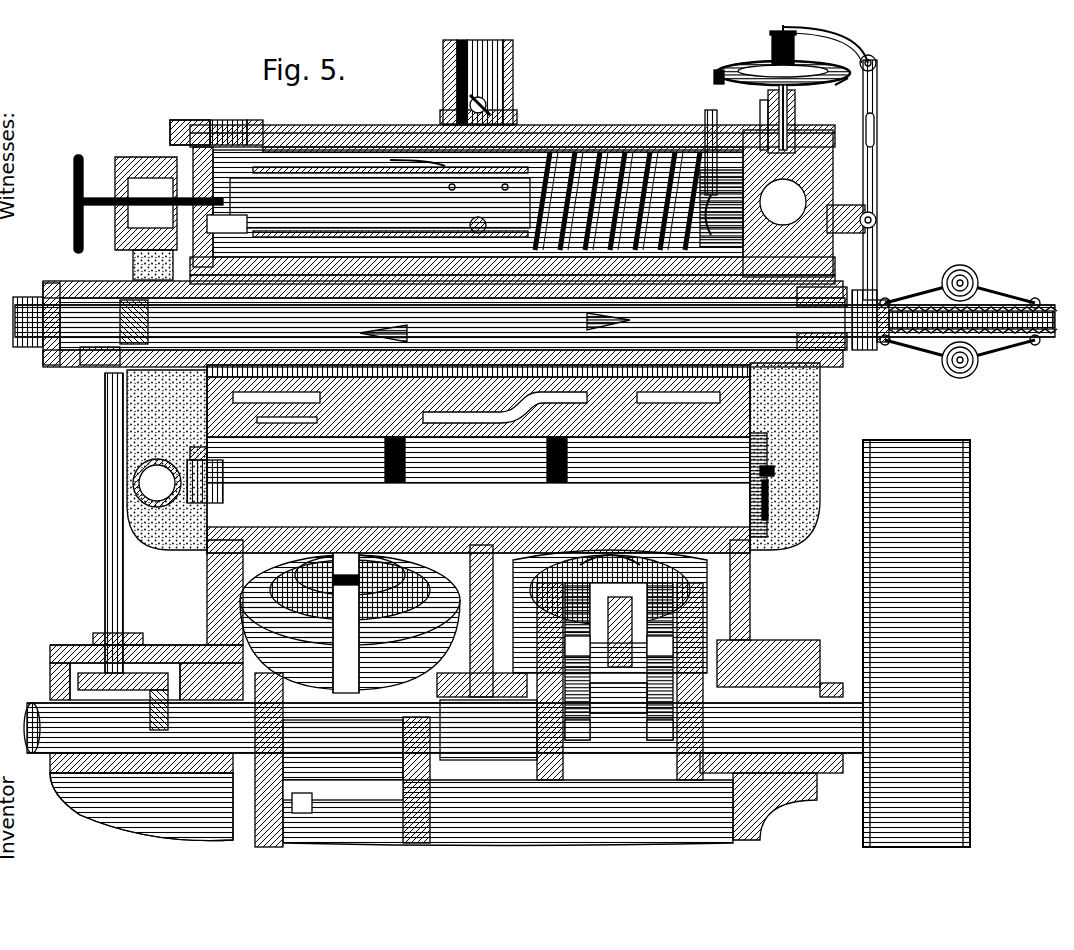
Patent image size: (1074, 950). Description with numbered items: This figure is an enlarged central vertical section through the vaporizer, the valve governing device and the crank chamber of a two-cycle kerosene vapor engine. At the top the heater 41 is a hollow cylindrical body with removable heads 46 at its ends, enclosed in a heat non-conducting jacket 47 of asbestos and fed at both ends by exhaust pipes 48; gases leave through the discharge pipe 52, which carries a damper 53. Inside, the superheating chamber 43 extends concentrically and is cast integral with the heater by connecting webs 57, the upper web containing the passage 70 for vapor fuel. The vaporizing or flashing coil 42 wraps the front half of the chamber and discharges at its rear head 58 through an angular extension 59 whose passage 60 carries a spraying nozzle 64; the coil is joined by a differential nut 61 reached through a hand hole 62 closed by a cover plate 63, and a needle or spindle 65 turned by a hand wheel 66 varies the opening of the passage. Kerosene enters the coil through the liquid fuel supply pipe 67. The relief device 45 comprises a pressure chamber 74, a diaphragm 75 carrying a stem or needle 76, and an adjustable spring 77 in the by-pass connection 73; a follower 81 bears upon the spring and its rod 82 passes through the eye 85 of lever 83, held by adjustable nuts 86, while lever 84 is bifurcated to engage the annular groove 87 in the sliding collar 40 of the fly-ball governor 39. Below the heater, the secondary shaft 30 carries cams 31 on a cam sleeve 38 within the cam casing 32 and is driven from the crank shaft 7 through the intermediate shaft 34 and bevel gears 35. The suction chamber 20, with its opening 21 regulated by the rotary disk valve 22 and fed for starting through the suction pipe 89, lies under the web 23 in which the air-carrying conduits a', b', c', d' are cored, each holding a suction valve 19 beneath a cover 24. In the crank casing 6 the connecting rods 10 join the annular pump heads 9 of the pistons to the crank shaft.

The crank casing 6 is at (479, 715).
The crank shaft 7 is at (848, 700).
The annular pump head 9 is at (228, 595).
The connecting rod 10 is at (527, 645).
The suction valve 19 is at (393, 472).
The suction chamber 20 is at (470, 459).
The opening 21 is at (752, 498).
The rotary disk valve 22 is at (765, 510).
The web 23 is at (607, 432).
The cover 24 is at (330, 440).
The secondary shaft 30 is at (534, 322).
The cam 31 is at (405, 330).
The cam casing 32 is at (92, 282).
The intermediate shaft 34 is at (108, 422).
The bevel gears 35 is at (90, 362).
The cam sleeve 38 is at (818, 352).
The fly-ball governor 39 is at (965, 375).
The sliding collar 40 is at (866, 352).
The heater 41 is at (640, 140).
The vaporizing or flashing coil 42 is at (540, 140).
The superheating chamber 43 is at (330, 160).
The relief device 45 is at (796, 100).
The removable head 46 is at (145, 165).
The heat non-conducting jacket 47 is at (340, 167).
The exhaust pipe 48 is at (812, 430).
The outlet or discharge pipe 52 is at (505, 58).
The damper 53 is at (485, 100).
The connecting web 57 is at (470, 223).
The head 58 is at (270, 214).
The angular extension 59 is at (135, 262).
The passage 60 is at (180, 143).
The differential nut 61 is at (228, 118).
The hand hole 62 is at (200, 125).
The cover plate 63 is at (253, 122).
The spraying nozzle 64 is at (272, 150).
The needle or spindle 65 is at (100, 198).
The hand wheel 66 is at (73, 205).
The liquid fuel supply pipe 67 is at (708, 118).
The passage 70 is at (445, 160).
The by-pass connection or pipe 73 is at (768, 108).
The pressure chamber 74 is at (748, 80).
The diaphragm 75 is at (835, 80).
The stem or needle 76 is at (788, 120).
The adjustable spring 77 is at (871, 58).
The follower 81 is at (720, 70).
The rod 82 is at (794, 50).
The lever 83 is at (878, 90).
The lever 84 is at (878, 187).
The eye 85 is at (772, 44).
The adjustable nuts 86 is at (770, 34).
The annular groove 87 is at (880, 298).
The suction pipe 89 is at (157, 490).
The air-carrying conduit a' is at (308, 467).
The air-carrying conduit b' is at (678, 454).
The air-carrying conduit c' is at (505, 455).
The air-carrying conduit d' is at (276, 455).